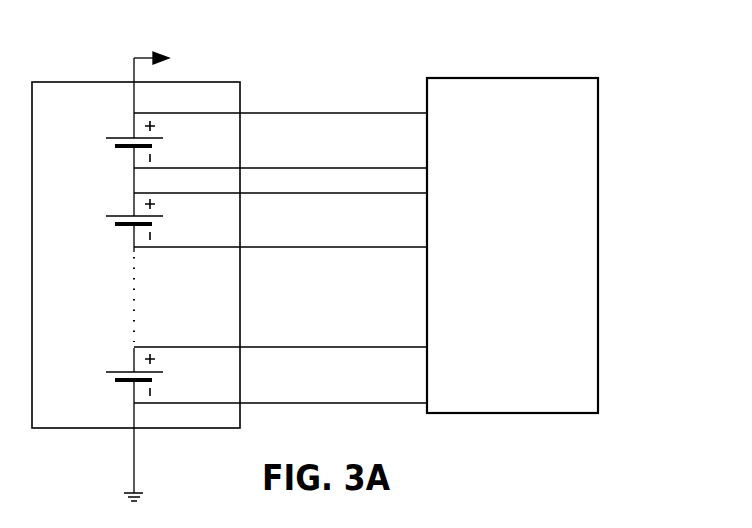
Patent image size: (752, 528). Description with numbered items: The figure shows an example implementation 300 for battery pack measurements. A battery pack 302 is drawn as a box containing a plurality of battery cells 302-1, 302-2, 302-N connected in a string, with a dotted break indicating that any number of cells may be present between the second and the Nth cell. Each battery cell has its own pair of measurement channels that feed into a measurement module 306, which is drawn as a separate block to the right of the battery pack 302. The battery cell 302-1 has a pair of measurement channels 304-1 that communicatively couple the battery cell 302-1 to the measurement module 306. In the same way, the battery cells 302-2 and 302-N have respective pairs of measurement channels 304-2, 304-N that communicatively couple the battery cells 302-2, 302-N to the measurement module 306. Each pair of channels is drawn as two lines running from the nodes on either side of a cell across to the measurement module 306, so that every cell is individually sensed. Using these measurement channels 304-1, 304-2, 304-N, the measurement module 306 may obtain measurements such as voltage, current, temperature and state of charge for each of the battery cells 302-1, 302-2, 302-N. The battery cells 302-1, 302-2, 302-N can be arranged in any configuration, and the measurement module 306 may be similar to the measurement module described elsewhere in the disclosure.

The example implementation for battery pack measurements 300 is at (364, 252).
The battery pack 302 is at (197, 82).
The battery cell 302-1 is at (108, 141).
The battery cell 302-2 is at (108, 219).
The battery cell 302-N is at (106, 375).
The pair of measurement channels 304-1 is at (319, 113).
The pair of measurement channels 304-2 is at (337, 193).
The pair of measurement channels 304-N is at (320, 347).
The measurement module 306 is at (599, 86).